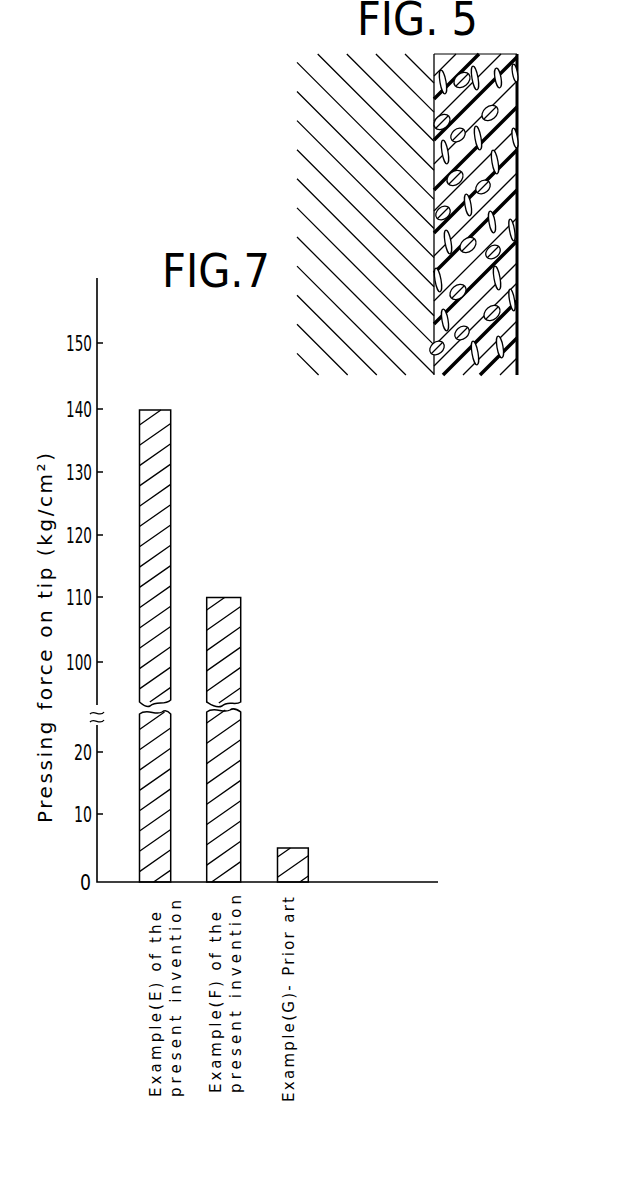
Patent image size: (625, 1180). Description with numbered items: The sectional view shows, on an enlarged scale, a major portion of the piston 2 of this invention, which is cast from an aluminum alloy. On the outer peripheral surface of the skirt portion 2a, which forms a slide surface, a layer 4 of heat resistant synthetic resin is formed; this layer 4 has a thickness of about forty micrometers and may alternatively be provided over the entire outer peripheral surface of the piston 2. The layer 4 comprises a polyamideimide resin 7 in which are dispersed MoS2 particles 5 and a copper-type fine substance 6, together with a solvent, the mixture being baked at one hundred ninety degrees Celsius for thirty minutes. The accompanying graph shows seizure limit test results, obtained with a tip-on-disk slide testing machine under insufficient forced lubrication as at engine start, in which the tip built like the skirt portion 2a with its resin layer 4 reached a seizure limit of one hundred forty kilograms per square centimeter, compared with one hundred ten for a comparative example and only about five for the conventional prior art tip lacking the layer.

The piston 2 is at (320, 41).
The skirt portion 2a is at (371, 353).
The layer of heat resistant synthetic resin 4 is at (517, 95).
The MoS2 particles 5 is at (497, 117).
The copper-type fine substance 6 is at (500, 279).
The polyamideimide resin 7 is at (506, 195).